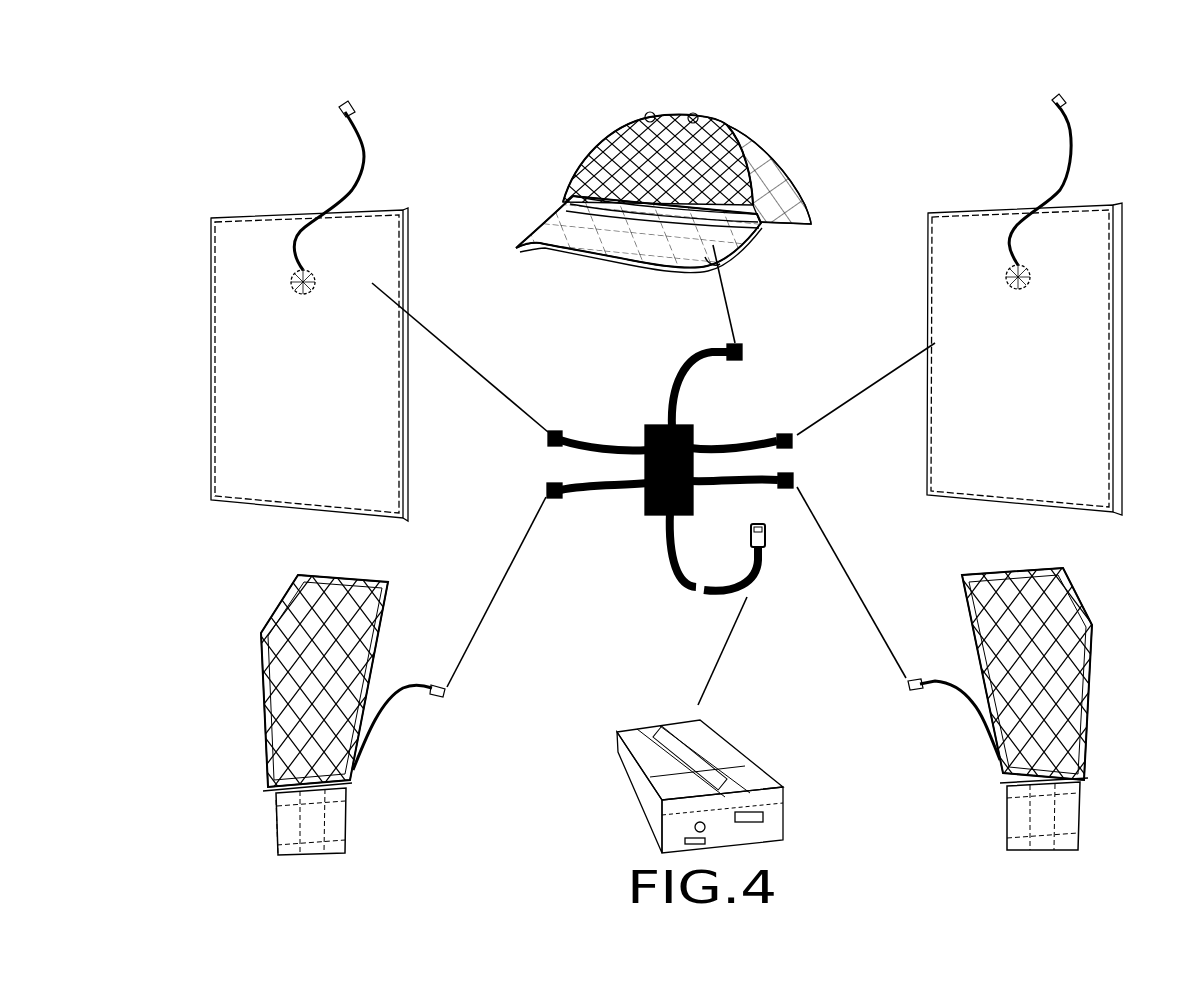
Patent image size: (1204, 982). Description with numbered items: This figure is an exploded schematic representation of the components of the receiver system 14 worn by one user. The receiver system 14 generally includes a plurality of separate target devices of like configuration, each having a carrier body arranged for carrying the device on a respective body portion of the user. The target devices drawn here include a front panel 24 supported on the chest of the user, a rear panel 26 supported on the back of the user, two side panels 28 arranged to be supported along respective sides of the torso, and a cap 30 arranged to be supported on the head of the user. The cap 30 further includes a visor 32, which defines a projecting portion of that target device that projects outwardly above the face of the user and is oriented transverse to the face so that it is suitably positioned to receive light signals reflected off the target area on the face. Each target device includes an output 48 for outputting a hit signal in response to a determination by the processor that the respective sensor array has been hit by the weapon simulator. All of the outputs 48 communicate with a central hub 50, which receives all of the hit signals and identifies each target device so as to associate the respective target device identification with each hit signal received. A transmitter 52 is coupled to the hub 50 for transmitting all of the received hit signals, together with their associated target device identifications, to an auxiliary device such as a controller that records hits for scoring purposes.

The stress testing system 14 is at (255, 83).
The front panel 24 is at (222, 330).
The rear panel 26 is at (1122, 330).
The side panels 28 is at (265, 694).
The cap 30 is at (773, 148).
The visor 32 is at (710, 260).
The output 48 is at (358, 132).
The hub 50 is at (647, 517).
The transmitter 52 is at (727, 743).